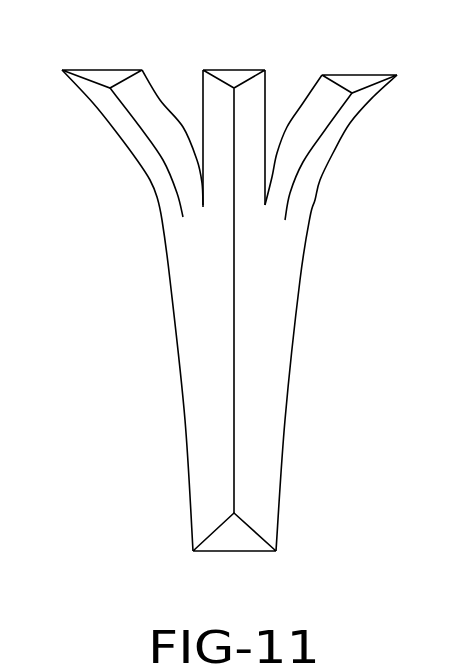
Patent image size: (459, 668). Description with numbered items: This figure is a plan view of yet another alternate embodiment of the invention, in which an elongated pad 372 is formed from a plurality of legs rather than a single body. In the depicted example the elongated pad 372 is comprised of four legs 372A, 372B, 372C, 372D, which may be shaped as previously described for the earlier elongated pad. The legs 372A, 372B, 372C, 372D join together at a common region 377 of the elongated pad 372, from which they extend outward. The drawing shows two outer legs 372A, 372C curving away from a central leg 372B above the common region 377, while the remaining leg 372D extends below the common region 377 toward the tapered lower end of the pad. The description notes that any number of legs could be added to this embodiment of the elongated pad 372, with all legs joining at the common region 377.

The elongated pad 372 is at (233, 275).
The leg 372A is at (157, 198).
The leg 372B is at (203, 103).
The leg 372C is at (312, 200).
The leg 372D is at (280, 505).
The common region 377 is at (227, 227).